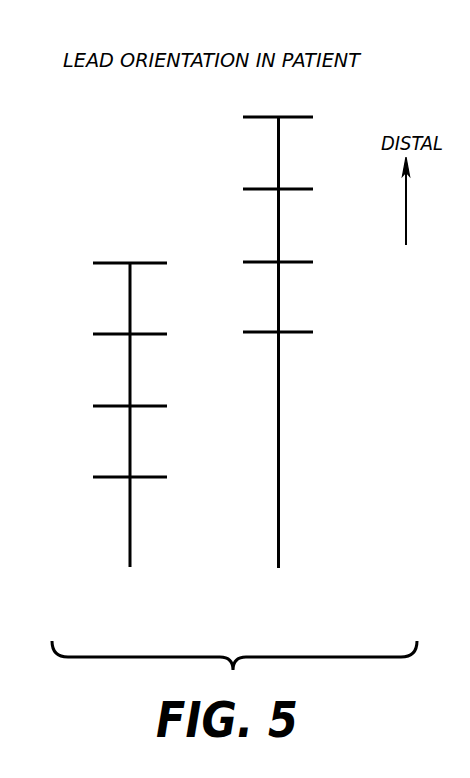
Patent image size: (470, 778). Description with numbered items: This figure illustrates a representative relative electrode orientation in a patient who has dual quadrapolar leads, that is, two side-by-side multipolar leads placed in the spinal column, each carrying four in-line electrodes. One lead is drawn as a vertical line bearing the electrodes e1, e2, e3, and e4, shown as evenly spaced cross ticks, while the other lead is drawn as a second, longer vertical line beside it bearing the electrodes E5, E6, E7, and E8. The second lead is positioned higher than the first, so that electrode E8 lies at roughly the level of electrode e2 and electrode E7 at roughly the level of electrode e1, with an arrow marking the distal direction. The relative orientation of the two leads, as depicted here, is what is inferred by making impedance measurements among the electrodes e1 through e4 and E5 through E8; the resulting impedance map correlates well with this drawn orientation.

The electrode E5 is at (296, 119).
The electrode E6 is at (296, 191).
The electrode E7 is at (296, 264).
The electrode E8 is at (296, 334).
The electrode e1 is at (117, 265).
The electrode e2 is at (117, 336).
The electrode e3 is at (117, 408).
The electrode e4 is at (117, 479).